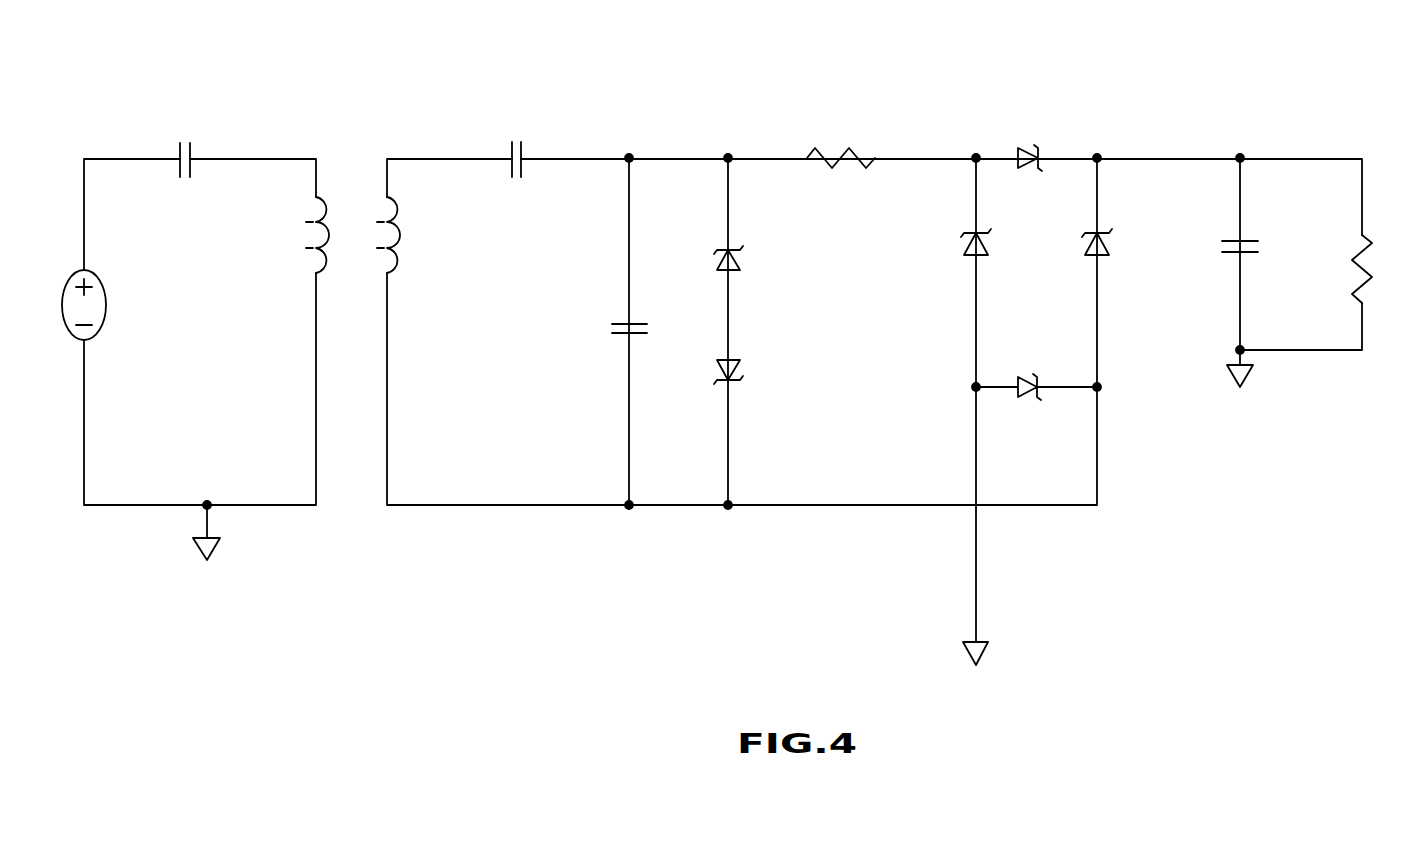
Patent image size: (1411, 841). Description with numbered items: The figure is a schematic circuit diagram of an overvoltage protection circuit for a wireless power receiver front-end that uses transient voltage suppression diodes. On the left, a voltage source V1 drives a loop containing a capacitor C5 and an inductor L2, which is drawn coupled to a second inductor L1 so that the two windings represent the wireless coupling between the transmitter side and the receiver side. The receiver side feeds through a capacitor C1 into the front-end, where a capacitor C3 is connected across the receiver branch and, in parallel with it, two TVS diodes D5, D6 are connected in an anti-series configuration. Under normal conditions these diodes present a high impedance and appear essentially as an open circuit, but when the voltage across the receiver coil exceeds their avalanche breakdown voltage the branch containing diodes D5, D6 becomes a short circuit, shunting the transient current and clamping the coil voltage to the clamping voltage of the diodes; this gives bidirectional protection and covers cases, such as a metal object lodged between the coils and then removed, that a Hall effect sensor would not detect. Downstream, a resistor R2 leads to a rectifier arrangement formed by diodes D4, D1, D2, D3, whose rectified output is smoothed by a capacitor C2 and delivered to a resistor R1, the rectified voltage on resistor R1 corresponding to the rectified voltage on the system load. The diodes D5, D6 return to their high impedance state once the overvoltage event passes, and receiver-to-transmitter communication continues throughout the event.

The capacitor C5 is at (192, 161).
The voltage source V1 is at (95, 290).
The inductor L2 (transformer secondary) L2 is at (345, 237).
The inductor L1 (transformer primary) L1 is at (426, 237).
The capacitor C1 is at (518, 162).
The capacitor C3 is at (604, 329).
The transient voltage suppression (TVS) diode D5 is at (717, 244).
The transient voltage suppression (TVS) diode D6 is at (743, 357).
The resistor R2 is at (841, 162).
The zener diode D4 is at (1029, 143).
The zener diode D1 is at (963, 226).
The zener diode D2 is at (1086, 226).
The zener diode D3 is at (1036, 369).
The capacitor C2 is at (1216, 246).
The resistor R1 is at (1337, 273).